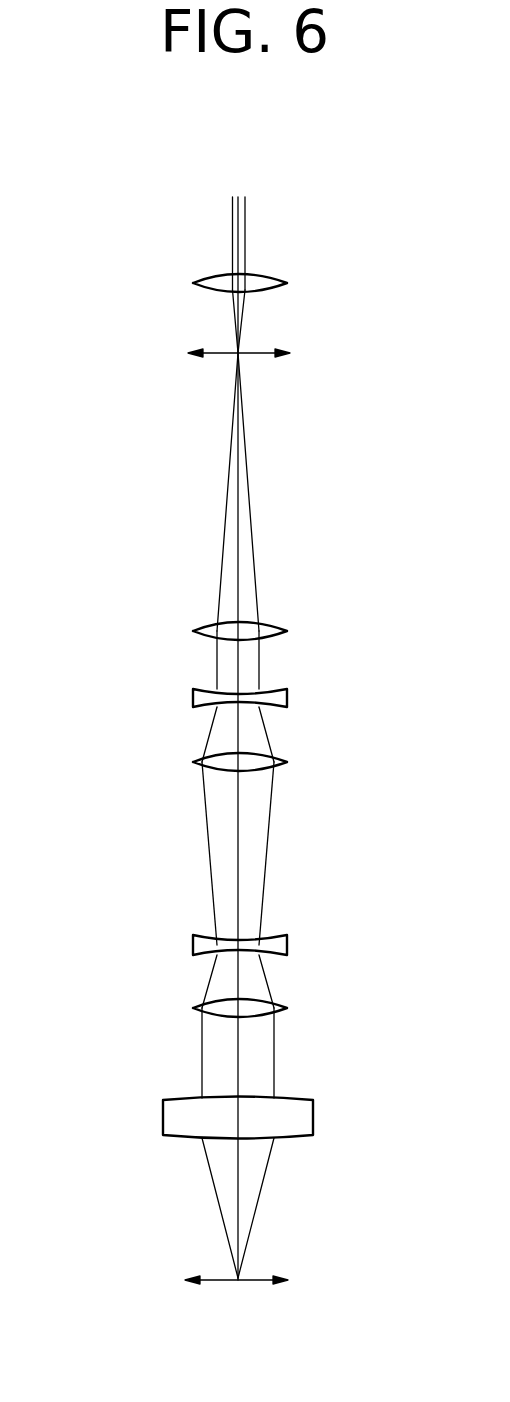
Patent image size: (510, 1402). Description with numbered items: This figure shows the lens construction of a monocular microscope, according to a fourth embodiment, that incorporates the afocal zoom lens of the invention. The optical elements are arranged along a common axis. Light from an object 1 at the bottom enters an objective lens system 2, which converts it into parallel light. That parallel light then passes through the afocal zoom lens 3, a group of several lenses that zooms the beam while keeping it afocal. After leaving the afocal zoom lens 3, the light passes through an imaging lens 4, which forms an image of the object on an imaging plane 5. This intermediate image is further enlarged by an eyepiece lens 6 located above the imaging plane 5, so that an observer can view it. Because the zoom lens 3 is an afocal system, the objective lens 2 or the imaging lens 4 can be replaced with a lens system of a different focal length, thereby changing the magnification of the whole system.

The object 1 is at (218, 1278).
The objective lens system 2 is at (163, 1113).
The afocal zoom lens 3 is at (165, 662).
The imaging lens 4 is at (210, 625).
The imaging plane 5 is at (213, 352).
The eyepiece lens 6 is at (210, 278).